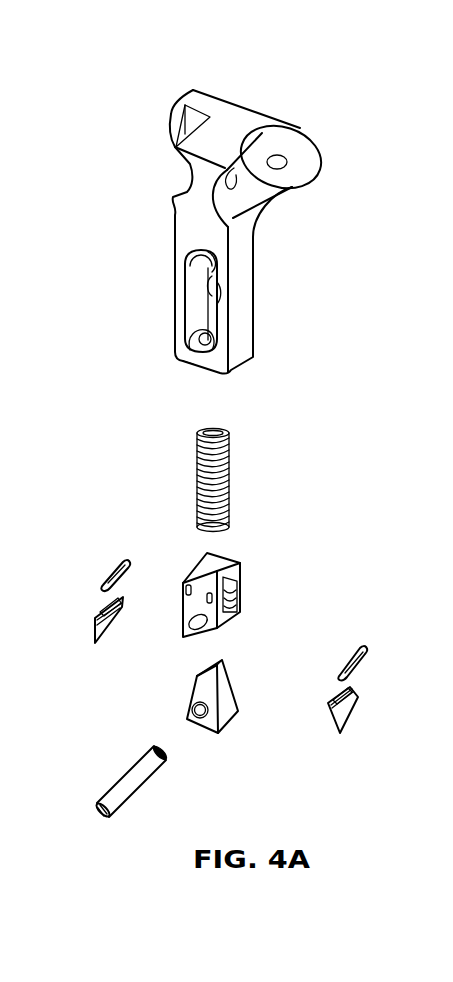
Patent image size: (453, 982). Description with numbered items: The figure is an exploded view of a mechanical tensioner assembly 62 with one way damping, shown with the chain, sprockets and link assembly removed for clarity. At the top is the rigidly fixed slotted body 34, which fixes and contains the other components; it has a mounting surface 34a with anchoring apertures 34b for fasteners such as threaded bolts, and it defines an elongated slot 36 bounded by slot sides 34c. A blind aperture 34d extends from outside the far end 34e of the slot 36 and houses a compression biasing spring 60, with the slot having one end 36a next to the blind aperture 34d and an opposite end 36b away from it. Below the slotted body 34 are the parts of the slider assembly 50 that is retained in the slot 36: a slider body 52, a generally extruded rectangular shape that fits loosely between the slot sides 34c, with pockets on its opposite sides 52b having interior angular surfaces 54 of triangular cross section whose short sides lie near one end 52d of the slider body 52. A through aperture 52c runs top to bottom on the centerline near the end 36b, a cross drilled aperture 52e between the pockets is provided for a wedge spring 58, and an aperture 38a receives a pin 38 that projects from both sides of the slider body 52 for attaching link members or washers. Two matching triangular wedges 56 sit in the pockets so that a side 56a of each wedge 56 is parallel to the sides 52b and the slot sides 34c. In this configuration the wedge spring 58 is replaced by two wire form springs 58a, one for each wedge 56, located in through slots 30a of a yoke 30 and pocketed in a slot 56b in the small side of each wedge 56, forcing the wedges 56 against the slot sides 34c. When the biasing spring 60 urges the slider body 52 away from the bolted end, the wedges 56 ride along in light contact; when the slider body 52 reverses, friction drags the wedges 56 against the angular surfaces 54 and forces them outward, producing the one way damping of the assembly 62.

The yoke 30 is at (232, 579).
The through slots 30a is at (232, 571).
The slotted body 34 is at (271, 136).
The mounting surface 34a is at (279, 97).
The anchoring apertures 34b is at (271, 109).
The slot sides 34c is at (210, 292).
The blind aperture 34d is at (151, 256).
The far end 34e is at (144, 364).
The slot 36 is at (202, 297).
The end of slot 36a is at (257, 257).
The end of slot 36b is at (150, 338).
The pin 38 is at (132, 804).
The aperture 38a is at (215, 755).
The slider assembly 50 is at (222, 647).
The slider body 52 is at (213, 711).
The sides of slider body 52b is at (203, 729).
The through aperture 52c is at (261, 331).
The end of slider body 52d is at (247, 647).
The cross drilled aperture 52e is at (267, 663).
The angular surfaces 54 is at (212, 697).
The wedges 56 is at (222, 670).
The side of wedge 56a is at (222, 651).
The slot in wedge 56b is at (236, 625).
The wedge spring 58 is at (356, 623).
The wire form springs 58a is at (103, 545).
The biasing spring 60 is at (255, 480).
The mechanical tensioner assembly 62 is at (236, 212).